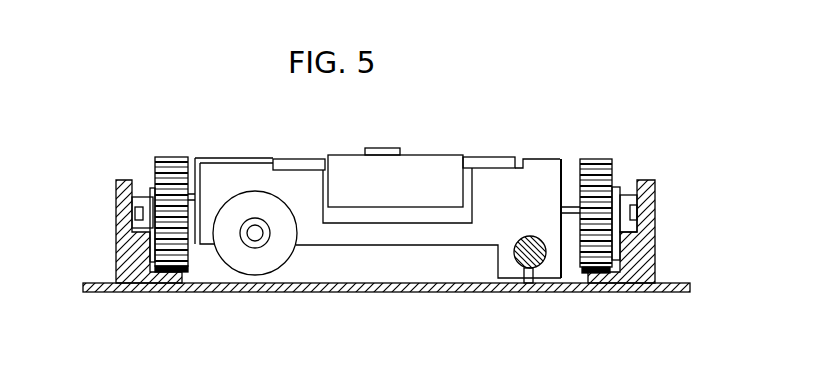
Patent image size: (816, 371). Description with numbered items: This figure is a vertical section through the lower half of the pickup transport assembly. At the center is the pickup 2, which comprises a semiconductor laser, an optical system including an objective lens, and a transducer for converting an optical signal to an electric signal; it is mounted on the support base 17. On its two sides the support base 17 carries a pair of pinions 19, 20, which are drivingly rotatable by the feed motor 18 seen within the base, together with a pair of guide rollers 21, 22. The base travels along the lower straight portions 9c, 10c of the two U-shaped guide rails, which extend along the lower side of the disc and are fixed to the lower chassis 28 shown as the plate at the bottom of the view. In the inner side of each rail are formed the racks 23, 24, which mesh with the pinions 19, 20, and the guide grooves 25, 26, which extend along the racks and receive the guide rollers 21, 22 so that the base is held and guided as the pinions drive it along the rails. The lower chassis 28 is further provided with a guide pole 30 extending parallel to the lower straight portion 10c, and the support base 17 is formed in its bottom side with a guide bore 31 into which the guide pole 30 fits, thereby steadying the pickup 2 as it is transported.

The pickup 2 is at (345, 177).
The support base 17 is at (492, 177).
The feed motor 18 is at (268, 262).
The pinion 19 is at (178, 182).
The pinion 20 is at (588, 187).
The guide roller 21 is at (143, 187).
The guide roller 22 is at (640, 182).
The rack 23 is at (180, 272).
The rack 24 is at (588, 273).
The guide groove 25 is at (117, 210).
The guide groove 26 is at (645, 226).
The lower chassis 28 is at (620, 283).
The guide pole 30 is at (514, 246).
The guide bore 31 is at (524, 237).
The lower straight portion 9c is at (127, 250).
The lower straight portion 10c is at (643, 268).